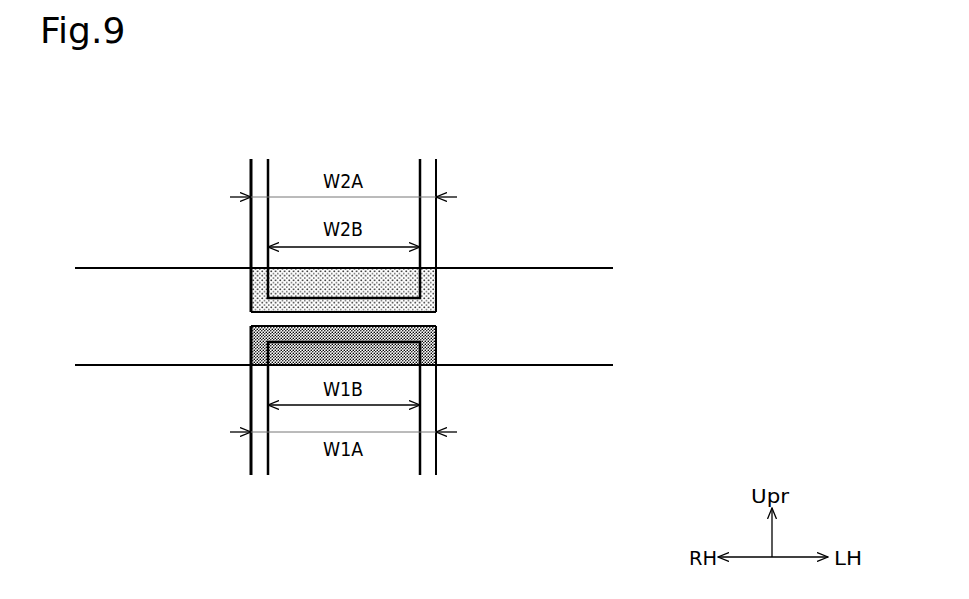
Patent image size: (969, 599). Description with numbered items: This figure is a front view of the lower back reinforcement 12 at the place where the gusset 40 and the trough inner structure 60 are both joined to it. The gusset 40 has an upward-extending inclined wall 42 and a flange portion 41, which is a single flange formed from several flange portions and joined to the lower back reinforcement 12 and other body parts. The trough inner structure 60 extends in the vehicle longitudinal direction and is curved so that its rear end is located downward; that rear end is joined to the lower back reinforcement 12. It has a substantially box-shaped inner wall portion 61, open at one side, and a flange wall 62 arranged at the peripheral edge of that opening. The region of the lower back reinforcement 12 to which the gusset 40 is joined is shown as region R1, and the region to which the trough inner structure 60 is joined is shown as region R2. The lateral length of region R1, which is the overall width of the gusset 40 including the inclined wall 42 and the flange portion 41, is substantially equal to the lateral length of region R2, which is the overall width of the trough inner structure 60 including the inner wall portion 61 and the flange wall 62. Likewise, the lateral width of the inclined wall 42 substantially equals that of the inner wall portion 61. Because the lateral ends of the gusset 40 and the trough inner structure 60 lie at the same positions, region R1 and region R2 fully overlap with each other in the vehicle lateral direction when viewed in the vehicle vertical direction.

The lower back reinforcement 12 is at (566, 288).
The gusset 40 is at (348, 424).
The flange portion 41 is at (259, 400).
The inclined wall 42 is at (283, 455).
The trough inner structure 60 is at (348, 216).
The inner wall portion 61 is at (290, 173).
The flange wall 62 is at (259, 225).
The region R1 is at (256, 345).
The region R2 is at (256, 292).